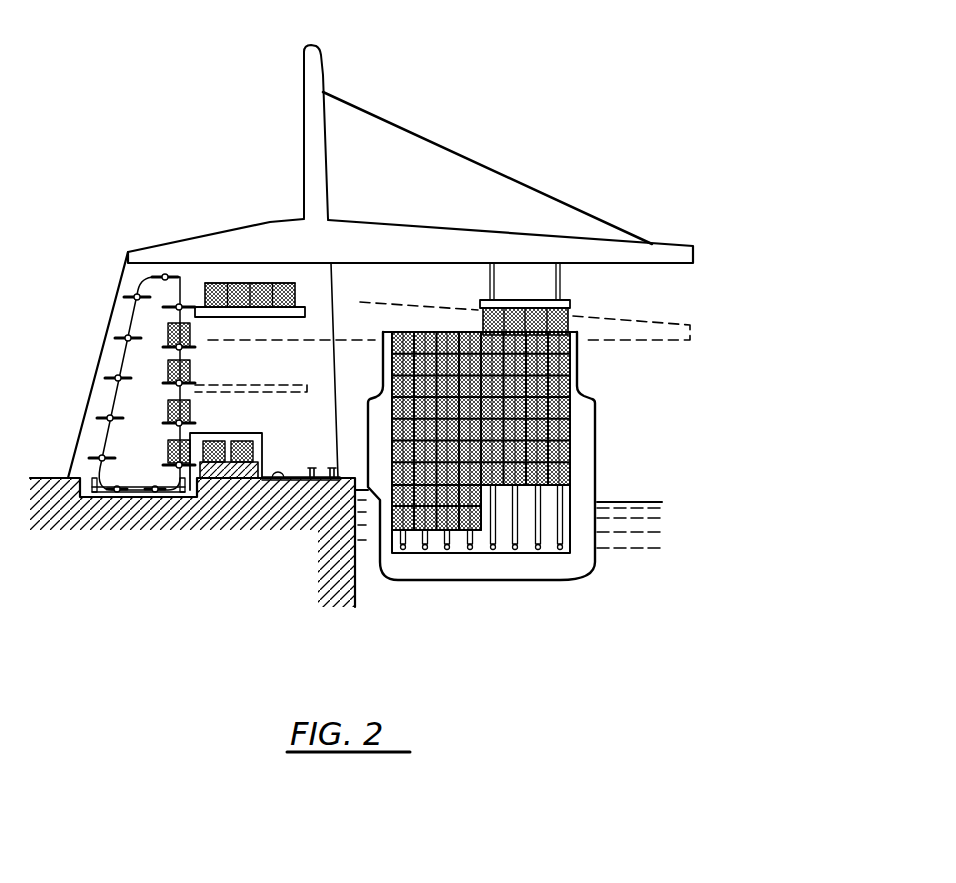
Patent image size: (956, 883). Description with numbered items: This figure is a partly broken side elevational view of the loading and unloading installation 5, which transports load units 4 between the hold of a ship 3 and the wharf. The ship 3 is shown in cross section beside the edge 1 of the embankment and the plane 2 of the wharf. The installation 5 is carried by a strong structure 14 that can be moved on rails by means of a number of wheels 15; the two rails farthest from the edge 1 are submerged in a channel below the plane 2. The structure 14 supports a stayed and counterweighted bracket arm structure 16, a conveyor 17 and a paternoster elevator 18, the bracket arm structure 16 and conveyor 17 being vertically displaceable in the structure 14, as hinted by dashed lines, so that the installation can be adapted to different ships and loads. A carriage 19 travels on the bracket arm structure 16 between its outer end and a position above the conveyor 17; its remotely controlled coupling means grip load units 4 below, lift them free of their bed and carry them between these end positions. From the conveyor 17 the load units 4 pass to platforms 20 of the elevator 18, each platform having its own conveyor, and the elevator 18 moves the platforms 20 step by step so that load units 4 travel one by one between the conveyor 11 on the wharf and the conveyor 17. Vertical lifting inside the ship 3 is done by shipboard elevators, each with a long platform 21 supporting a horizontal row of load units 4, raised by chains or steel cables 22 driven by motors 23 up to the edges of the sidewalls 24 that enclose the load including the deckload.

The edge of the embankment 1 is at (378, 493).
The plane of the wharf 2 is at (278, 483).
The ship 3 is at (585, 462).
The load units 4 is at (212, 290).
The loading and unloading installation 5 is at (487, 144).
The conveyor on the wharf 11 is at (227, 470).
The structure 14 is at (205, 283).
The wheels 15 is at (105, 492).
The bracket arm structure 16 is at (520, 247).
The conveyor 17 is at (257, 310).
The paternoster elevator 18 is at (118, 274).
The carriage 19 is at (523, 303).
The platforms 20 is at (121, 330).
The platform 21 is at (475, 535).
The chains or steel cables 22 is at (498, 528).
The motors 23 is at (558, 551).
The sidewalls 24 is at (573, 366).